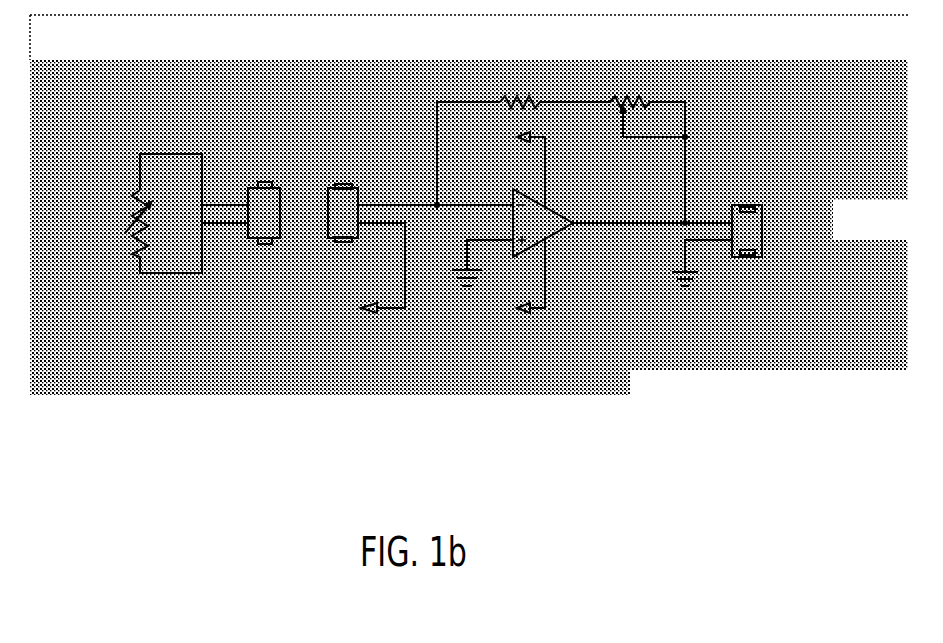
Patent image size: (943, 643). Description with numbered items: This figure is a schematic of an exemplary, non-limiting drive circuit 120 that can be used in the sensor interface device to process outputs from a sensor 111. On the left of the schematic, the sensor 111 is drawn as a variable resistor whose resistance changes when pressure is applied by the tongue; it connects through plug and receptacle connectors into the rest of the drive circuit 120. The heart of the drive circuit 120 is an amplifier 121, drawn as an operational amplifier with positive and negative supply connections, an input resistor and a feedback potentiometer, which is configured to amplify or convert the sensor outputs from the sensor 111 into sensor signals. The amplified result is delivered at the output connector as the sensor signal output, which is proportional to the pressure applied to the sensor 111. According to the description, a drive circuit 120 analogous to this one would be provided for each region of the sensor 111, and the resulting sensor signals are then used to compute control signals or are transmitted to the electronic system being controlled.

The drive circuit 120 is at (469, 206).
The sensor 111 is at (124, 220).
The amplifier 121 is at (550, 210).